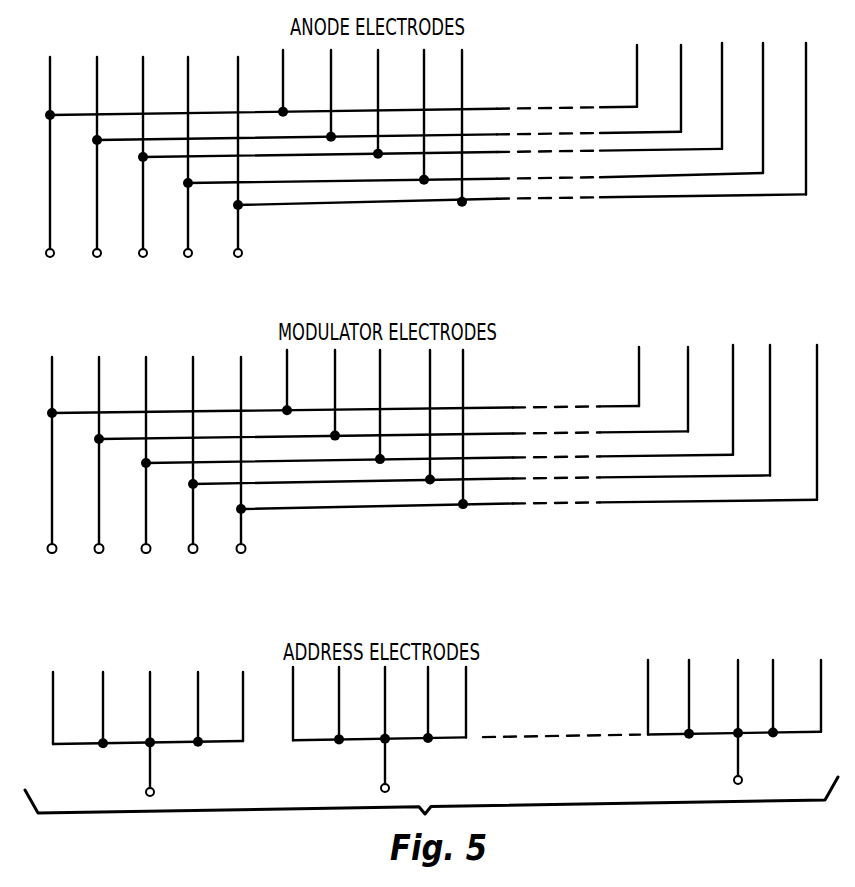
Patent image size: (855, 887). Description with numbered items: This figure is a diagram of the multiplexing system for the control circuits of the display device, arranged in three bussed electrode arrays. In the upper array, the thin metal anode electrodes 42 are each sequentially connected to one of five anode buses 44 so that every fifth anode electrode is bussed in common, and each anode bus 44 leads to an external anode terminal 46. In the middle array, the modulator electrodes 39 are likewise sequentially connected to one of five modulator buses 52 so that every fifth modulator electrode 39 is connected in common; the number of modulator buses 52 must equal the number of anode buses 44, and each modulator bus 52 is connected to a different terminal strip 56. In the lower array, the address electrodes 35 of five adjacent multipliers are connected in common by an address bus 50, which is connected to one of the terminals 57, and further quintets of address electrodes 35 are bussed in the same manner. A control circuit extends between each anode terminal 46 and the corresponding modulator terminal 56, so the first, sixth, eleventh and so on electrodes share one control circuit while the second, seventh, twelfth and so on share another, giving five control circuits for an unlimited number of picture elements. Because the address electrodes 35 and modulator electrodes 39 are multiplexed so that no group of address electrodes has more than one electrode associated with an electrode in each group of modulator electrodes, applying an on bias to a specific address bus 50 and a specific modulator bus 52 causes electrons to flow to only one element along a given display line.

The anode electrode stripe 42 is at (98, 70).
The anode bus 44 is at (332, 181).
The external anode terminal 46 is at (100, 243).
The modulator electrode 39 is at (99, 370).
The modulator bus 52 is at (348, 460).
The terminal strip 56 is at (55, 538).
The address electrode 35 is at (103, 685).
The address bus 50 is at (178, 743).
The terminal 57 is at (150, 776).